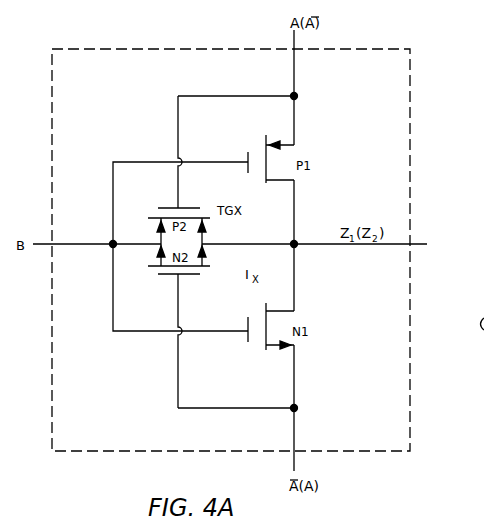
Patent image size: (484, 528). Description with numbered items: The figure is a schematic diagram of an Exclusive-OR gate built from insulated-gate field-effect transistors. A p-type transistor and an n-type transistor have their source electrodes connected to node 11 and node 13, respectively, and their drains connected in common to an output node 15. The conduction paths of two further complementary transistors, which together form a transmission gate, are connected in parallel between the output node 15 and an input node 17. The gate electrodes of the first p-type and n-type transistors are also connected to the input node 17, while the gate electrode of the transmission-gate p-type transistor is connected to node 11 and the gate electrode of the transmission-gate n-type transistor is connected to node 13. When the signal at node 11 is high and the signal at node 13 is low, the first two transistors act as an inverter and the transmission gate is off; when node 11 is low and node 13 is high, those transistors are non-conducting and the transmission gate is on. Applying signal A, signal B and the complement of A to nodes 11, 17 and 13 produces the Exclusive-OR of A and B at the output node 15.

The node 11 is at (297, 95).
The node 13 is at (297, 408).
The output node 15 is at (297, 241).
The input node 17 is at (110, 242).